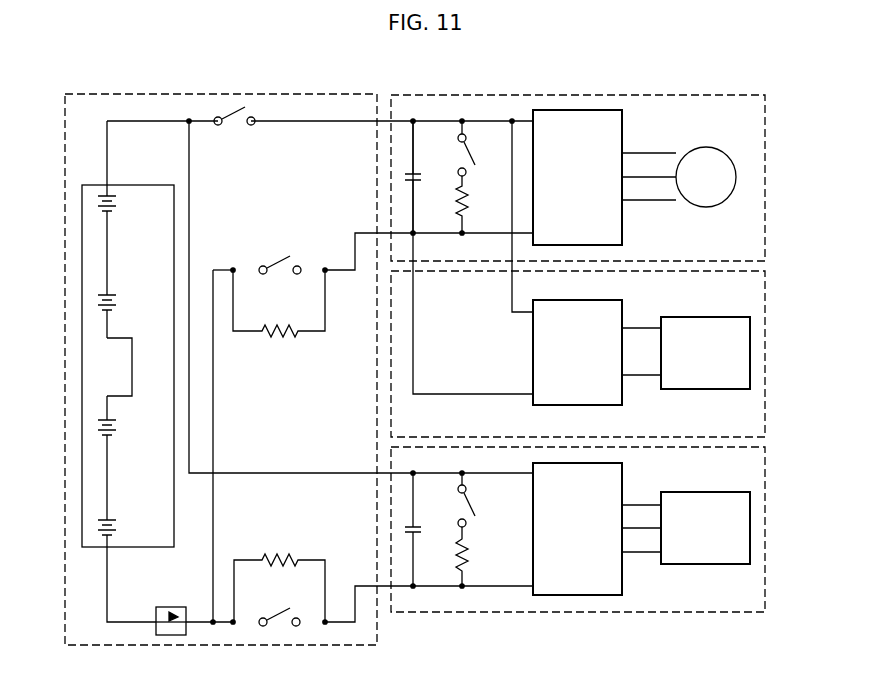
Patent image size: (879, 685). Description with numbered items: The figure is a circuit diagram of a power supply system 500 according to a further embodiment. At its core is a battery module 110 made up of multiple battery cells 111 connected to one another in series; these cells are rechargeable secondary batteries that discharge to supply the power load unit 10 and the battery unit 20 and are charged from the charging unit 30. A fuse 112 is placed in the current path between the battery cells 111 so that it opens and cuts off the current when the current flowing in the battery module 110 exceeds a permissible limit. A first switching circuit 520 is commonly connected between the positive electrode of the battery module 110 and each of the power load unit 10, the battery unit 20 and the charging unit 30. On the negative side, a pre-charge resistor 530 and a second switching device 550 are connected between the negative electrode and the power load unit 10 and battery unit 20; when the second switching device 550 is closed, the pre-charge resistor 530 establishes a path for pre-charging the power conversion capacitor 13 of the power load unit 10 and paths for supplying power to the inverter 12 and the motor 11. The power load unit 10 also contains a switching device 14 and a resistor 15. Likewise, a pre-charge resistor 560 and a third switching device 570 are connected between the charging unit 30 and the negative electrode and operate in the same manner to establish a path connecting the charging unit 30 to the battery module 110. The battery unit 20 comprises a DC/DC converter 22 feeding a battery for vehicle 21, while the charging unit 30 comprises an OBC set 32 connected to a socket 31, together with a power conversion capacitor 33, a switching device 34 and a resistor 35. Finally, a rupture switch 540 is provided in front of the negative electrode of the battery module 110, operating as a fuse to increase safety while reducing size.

The power supply system 500 is at (65, 97).
The battery module 110 is at (128, 348).
The battery cell 111 is at (116, 205).
The fuse 112 is at (132, 367).
The first switching circuit 520 is at (234, 130).
The pre-charge resistor 530 is at (281, 334).
The rupture switch 540 is at (170, 607).
The second switching device 550 is at (281, 260).
The pre-charge resistor 560 is at (278, 556).
The third switching device 570 is at (279, 611).
The power load unit 10 is at (772, 106).
The motor 11 is at (705, 208).
The inverter 12 is at (623, 116).
The power conversion capacitor 13 is at (418, 183).
The switching device 14 is at (469, 147).
The resistor 15 is at (468, 200).
The battery unit 20 is at (772, 282).
The battery for vehicle 21 is at (705, 390).
The DC/DC converter 22 is at (623, 302).
The charging unit 30 is at (772, 458).
The socket 31 is at (705, 565).
The OBC set 32 is at (623, 473).
The power conversion capacitor 33 is at (418, 535).
The switching device 34 is at (469, 498).
The resistor 35 is at (468, 554).